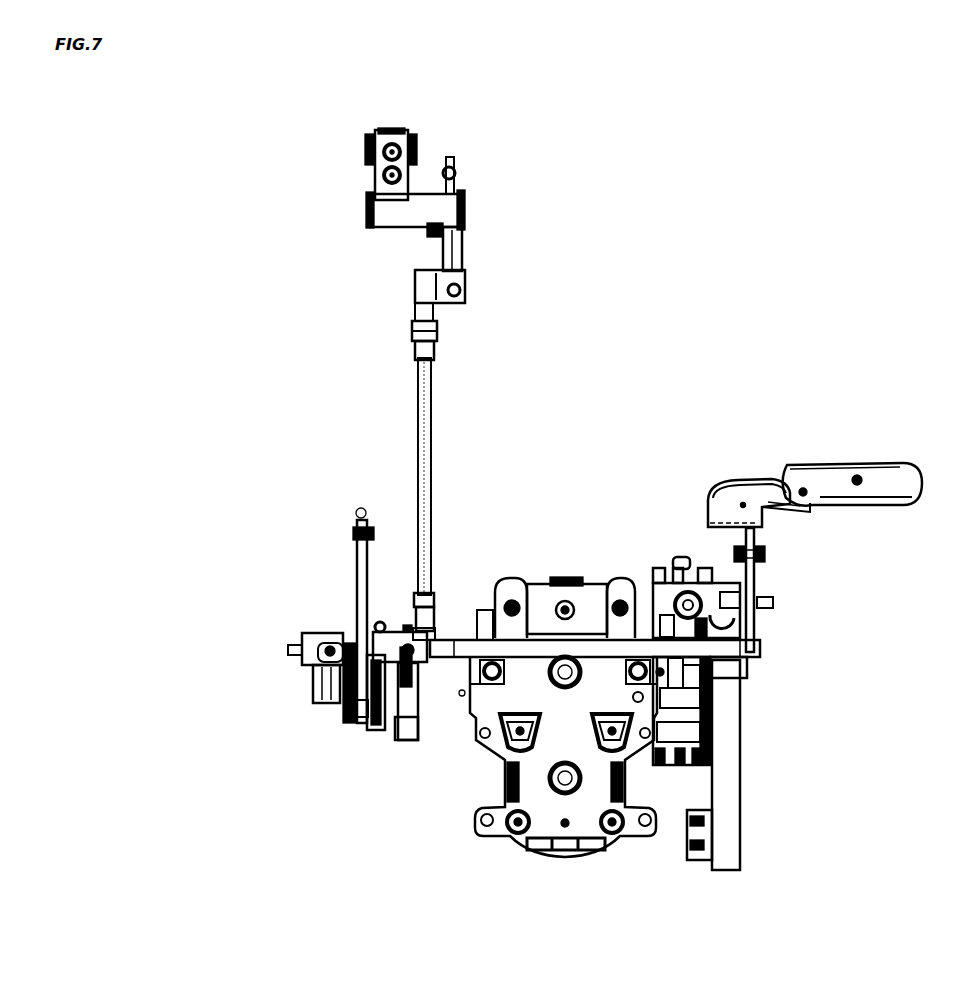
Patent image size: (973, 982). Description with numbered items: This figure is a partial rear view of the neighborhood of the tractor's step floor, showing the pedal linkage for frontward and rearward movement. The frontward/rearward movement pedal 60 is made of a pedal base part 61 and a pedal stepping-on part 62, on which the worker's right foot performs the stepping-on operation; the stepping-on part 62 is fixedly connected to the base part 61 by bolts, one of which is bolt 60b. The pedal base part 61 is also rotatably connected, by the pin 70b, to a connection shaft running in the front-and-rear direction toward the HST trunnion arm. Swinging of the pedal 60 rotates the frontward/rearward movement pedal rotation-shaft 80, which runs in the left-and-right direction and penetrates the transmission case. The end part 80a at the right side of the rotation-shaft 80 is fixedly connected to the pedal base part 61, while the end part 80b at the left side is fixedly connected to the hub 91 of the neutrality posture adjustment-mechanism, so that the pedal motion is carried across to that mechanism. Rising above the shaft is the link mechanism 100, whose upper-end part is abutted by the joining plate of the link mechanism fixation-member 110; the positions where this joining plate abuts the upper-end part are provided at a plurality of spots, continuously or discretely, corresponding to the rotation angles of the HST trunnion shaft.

The frontward/rearward movement pedal 60 is at (905, 465).
The bolt 60b is at (733, 556).
The pedal base part 61 is at (760, 583).
The pedal stepping-on part 62 is at (735, 532).
The pin 70b is at (777, 600).
The frontward/rearward movement pedal rotation-shaft 80 is at (450, 660).
The end part at the right side of the rotation-shaft 80a is at (765, 648).
The end part at the left side of the rotation-shaft 80b is at (440, 660).
The hub 91 is at (398, 632).
The link mechanism 100 is at (388, 397).
The link mechanism fixation-member 110 is at (352, 175).